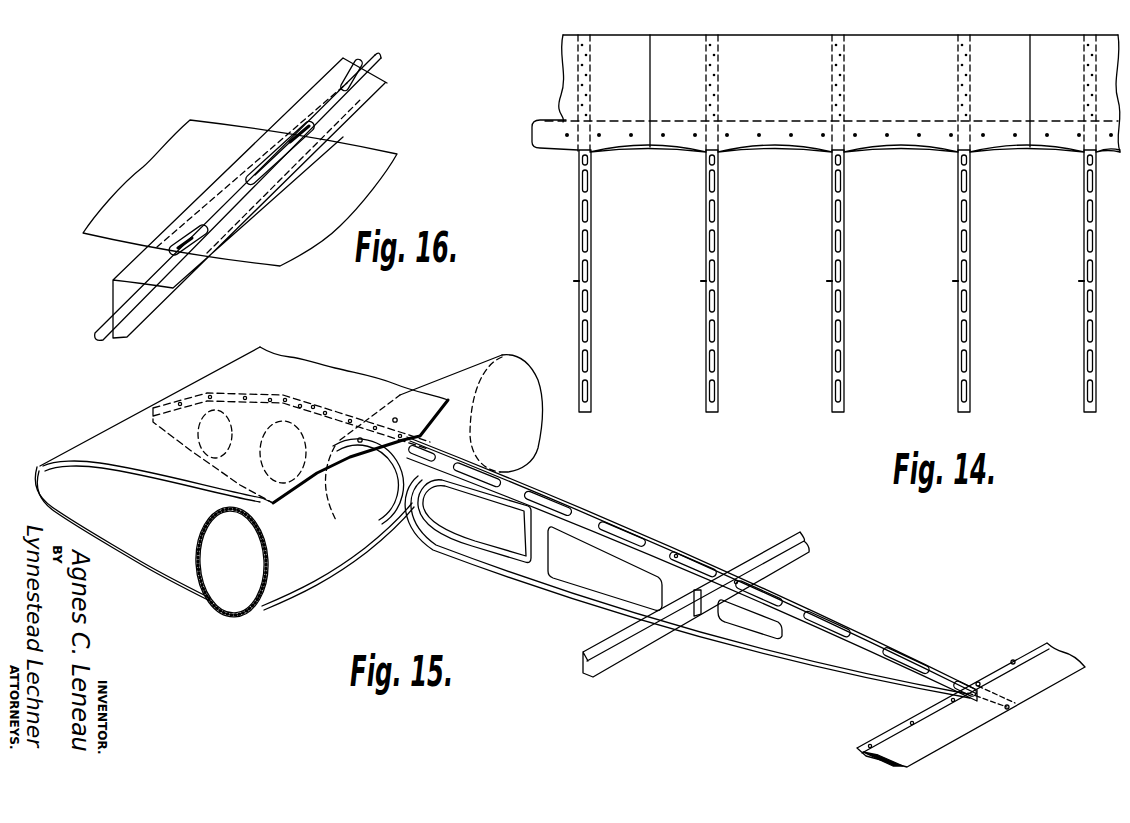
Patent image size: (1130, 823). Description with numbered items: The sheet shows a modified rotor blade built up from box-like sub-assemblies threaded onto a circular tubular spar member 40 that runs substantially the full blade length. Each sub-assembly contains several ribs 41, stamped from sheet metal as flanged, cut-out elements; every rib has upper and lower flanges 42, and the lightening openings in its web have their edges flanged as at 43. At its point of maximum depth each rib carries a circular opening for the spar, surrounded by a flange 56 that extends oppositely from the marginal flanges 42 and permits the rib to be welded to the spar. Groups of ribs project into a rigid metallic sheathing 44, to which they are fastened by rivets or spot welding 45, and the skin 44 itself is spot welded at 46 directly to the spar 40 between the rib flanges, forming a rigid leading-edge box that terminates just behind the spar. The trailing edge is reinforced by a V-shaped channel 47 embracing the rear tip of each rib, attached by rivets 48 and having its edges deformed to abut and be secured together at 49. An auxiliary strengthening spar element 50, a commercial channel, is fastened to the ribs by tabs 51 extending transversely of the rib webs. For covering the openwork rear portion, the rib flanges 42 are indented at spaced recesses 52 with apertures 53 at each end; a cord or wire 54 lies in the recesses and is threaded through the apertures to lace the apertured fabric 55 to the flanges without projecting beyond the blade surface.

In FIG. 14, the tubular spar member 40 is at (546, 151).
In FIG. 15, the tubular spar member 40 is at (462, 392).
In FIG. 16, the rib 41 is at (117, 295).
In FIG. 15, the rib 41 is at (530, 535).
In FIG. 14, the rib flange 42 is at (832, 347).
In FIG. 16, the rib flange 42 is at (193, 268).
In FIG. 15, the rib flange 42 is at (588, 518).
In FIG. 15, the flanged opening edge 43 is at (450, 541).
In FIG. 14, the rigid metallic sheathing 44 is at (832, 93).
In FIG. 15, the rigid metallic sheathing 44 is at (110, 448).
In FIG. 14, the rivets or spot welding 45 is at (846, 108).
In FIG. 15, the rivets or spot welding 45 is at (313, 406).
In FIG. 14, the spot welding 46 is at (791, 133).
In FIG. 15, the spot welding 46 is at (395, 418).
In FIG. 15, the V-shaped channel 47 is at (945, 735).
In FIG. 15, the rivets 48 is at (1010, 708).
In FIG. 15, the secured channel edges 49 is at (998, 658).
In FIG. 15, the auxiliary strengthening spar element 50 is at (780, 568).
In FIG. 14, the tab 51 is at (706, 281).
In FIG. 15, the tab 51 is at (700, 616).
In FIG. 14, the recess 52 is at (1084, 337).
In FIG. 16, the recess 52 is at (360, 67).
In FIG. 15, the recess 52 is at (640, 541).
In FIG. 16, the aperture 53 is at (312, 128).
In FIG. 15, the aperture 53 is at (736, 582).
In FIG. 16, the cord or wire 54 is at (382, 62).
In FIG. 16, the fabric 55 is at (168, 153).
In FIG. 15, the flange 56 is at (404, 512).